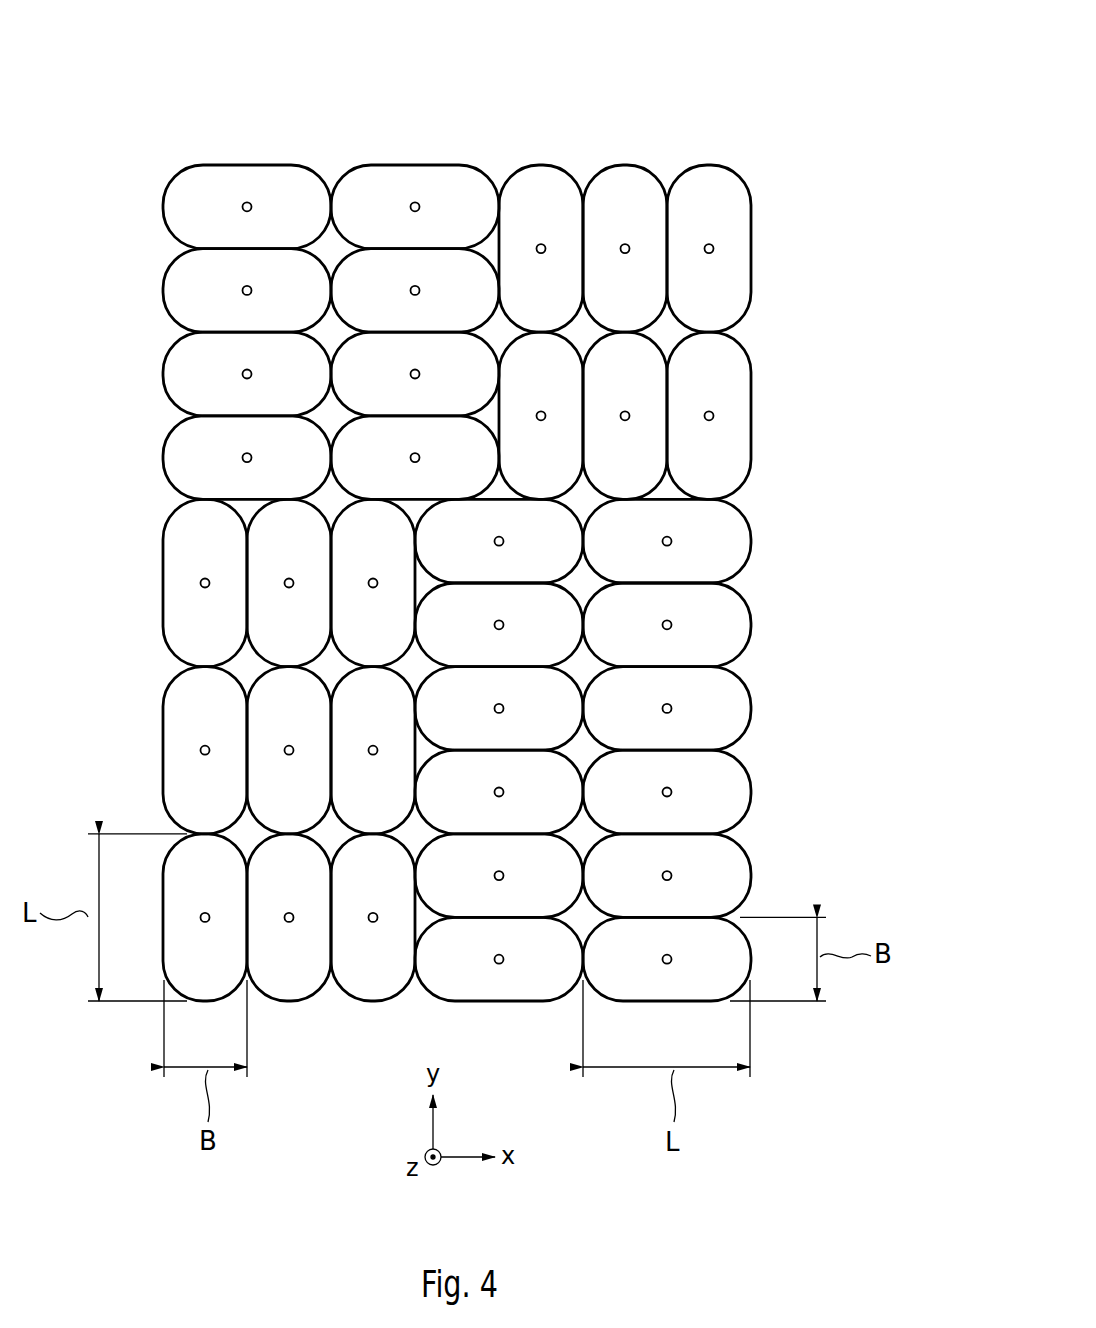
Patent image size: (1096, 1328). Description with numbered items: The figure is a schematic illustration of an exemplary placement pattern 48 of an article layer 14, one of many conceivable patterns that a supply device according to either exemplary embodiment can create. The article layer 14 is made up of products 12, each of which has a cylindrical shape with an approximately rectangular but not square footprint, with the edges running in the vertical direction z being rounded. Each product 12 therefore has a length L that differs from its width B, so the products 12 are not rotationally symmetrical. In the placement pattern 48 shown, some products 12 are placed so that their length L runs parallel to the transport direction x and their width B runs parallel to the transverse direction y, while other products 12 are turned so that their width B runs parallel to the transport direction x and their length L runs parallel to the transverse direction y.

The product 12 is at (187, 458).
The article layer 14 is at (800, 163).
The placement pattern 48 is at (458, 583).